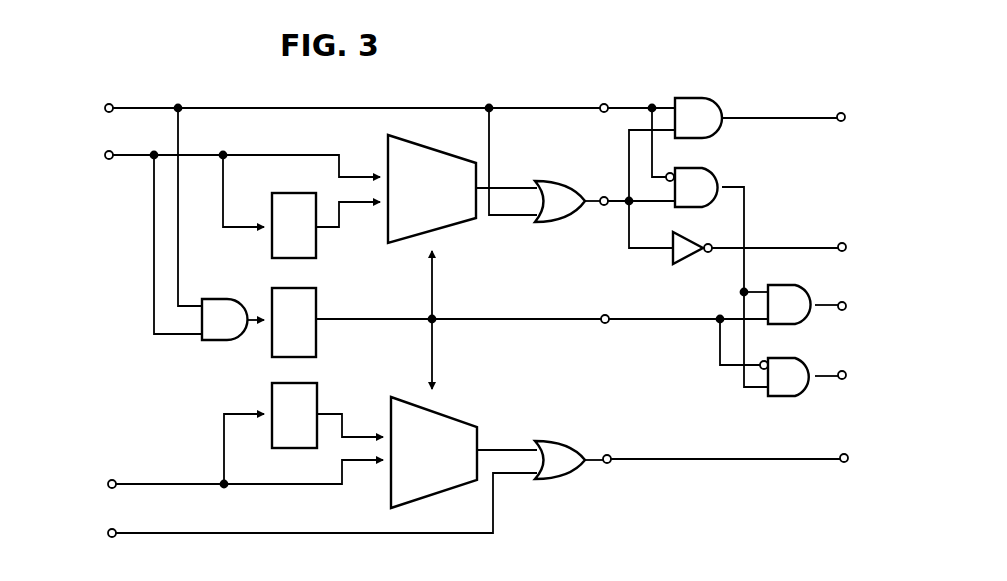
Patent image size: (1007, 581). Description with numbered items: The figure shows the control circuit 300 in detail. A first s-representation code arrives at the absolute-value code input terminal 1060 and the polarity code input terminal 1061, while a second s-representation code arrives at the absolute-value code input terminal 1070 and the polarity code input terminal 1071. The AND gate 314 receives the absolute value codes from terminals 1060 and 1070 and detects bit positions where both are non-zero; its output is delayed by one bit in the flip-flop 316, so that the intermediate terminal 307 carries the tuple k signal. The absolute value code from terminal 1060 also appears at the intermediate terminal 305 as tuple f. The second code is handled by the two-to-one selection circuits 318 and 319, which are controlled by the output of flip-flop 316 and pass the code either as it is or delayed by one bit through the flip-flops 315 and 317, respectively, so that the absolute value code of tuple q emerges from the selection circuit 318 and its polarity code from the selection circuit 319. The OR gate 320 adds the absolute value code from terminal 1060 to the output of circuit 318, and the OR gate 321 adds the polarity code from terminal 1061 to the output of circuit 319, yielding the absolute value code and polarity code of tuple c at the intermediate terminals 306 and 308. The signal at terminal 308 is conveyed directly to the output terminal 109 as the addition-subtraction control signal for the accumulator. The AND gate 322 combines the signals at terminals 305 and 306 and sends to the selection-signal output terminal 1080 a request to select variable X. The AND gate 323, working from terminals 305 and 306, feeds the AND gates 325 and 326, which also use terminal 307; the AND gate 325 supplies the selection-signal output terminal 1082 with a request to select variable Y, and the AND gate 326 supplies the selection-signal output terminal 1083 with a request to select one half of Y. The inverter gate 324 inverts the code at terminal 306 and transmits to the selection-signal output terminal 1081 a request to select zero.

The control circuit 300 is at (899, 285).
The AND gate 314 is at (246, 297).
The flip-flop 315 is at (281, 194).
The flip-flop 316 is at (318, 309).
The flip-flop 317 is at (318, 401).
The 2-1 selection circuit 318 is at (428, 145).
The 2-1 selection circuit 319 is at (436, 499).
The OR gate 320 is at (571, 236).
The OR gate 321 is at (542, 483).
The AND gate 322 is at (721, 87).
The AND gate 323 is at (722, 173).
The inverter gate 324 is at (692, 241).
The AND gate 325 is at (809, 286).
The AND gate 326 is at (786, 399).
The intermediate terminal 305 is at (614, 94).
The intermediate terminal 306 is at (605, 207).
The intermediate terminal 307 is at (615, 304).
The intermediate terminal 308 is at (606, 466).
The absolute-value code input terminal 1060 is at (105, 108).
The polarity code input terminal 1061 is at (106, 535).
The absolute-value code input terminal 1070 is at (105, 155).
The polarity code input terminal 1071 is at (106, 486).
The selection-signal output terminal 1080 is at (861, 128).
The selection-signal output terminal 1081 is at (862, 258).
The selection-signal output terminal 1082 is at (862, 317).
The selection-signal output terminal 1083 is at (862, 386).
The addition-subtraction control signal 109 is at (848, 456).